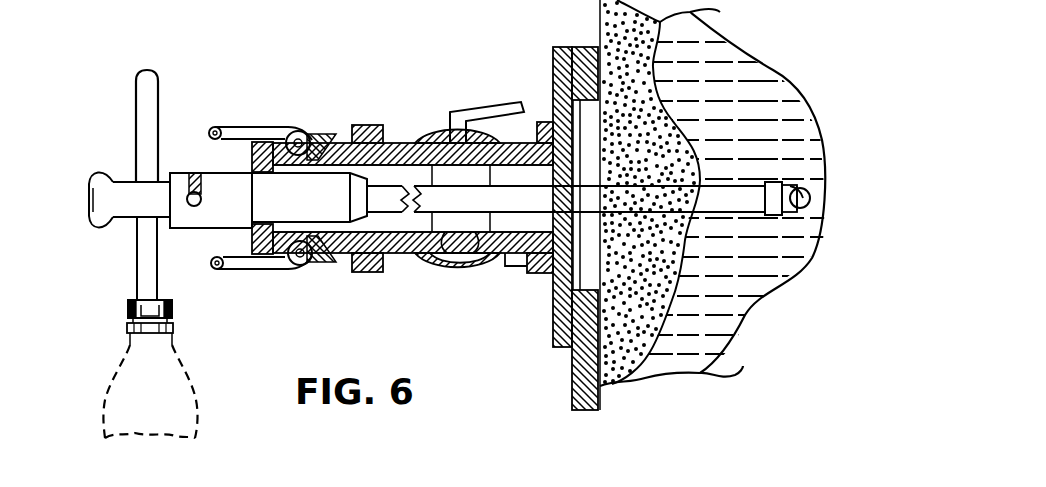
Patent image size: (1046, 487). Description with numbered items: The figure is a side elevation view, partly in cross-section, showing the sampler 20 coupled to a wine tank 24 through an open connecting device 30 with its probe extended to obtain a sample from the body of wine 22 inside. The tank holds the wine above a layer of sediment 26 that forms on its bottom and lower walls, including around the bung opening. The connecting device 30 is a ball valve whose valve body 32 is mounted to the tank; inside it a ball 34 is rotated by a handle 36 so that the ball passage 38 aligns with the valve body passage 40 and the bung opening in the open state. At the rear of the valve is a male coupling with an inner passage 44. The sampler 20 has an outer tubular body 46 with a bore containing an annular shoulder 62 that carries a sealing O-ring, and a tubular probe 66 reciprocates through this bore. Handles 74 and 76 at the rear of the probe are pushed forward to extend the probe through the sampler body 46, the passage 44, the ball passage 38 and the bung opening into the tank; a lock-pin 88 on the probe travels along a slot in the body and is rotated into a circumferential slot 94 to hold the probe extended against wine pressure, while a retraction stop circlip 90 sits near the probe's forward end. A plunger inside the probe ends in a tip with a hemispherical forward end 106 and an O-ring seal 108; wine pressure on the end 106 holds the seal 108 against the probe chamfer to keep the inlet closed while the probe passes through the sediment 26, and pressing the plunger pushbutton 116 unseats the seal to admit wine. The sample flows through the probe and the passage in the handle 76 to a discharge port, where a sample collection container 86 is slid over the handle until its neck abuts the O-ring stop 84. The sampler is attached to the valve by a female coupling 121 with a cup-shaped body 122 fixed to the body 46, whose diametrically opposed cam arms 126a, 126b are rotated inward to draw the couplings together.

The sampler 20 is at (227, 73).
The body of wine 22 is at (752, 282).
The wine tank 24 is at (598, 392).
The sediment layer 26 is at (650, 330).
The connecting device 30 is at (443, 64).
The valve body 32 is at (473, 243).
The ball 34 is at (458, 245).
The handle 36 is at (481, 106).
The ball passage 38 is at (461, 232).
The valve body passage 40 is at (511, 245).
The male coupling inner passage 44 is at (394, 260).
The outer tubular body 46 is at (212, 223).
The annular shoulder 62 is at (566, 178).
The tubular probe 66 is at (523, 245).
The handle 74 is at (147, 95).
The handle 76 is at (140, 252).
The O-ring 84 is at (133, 306).
The sample collection container 86 is at (126, 380).
The lock-pin 88 is at (190, 198).
The retraction stop circlip 90 is at (797, 213).
The circumferential slot 94 is at (200, 178).
The hemispherical forward end 106 is at (807, 192).
The O-ring seal 108 is at (793, 182).
The plunger pushbutton 116 is at (97, 172).
The female coupling 121 is at (345, 76).
The cup-shaped body 122 is at (318, 270).
The cam arm 126a is at (243, 128).
The cam arm 126b is at (241, 272).